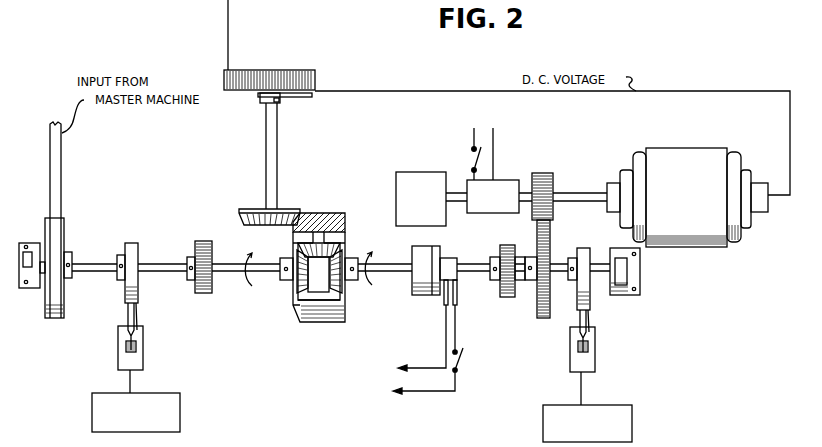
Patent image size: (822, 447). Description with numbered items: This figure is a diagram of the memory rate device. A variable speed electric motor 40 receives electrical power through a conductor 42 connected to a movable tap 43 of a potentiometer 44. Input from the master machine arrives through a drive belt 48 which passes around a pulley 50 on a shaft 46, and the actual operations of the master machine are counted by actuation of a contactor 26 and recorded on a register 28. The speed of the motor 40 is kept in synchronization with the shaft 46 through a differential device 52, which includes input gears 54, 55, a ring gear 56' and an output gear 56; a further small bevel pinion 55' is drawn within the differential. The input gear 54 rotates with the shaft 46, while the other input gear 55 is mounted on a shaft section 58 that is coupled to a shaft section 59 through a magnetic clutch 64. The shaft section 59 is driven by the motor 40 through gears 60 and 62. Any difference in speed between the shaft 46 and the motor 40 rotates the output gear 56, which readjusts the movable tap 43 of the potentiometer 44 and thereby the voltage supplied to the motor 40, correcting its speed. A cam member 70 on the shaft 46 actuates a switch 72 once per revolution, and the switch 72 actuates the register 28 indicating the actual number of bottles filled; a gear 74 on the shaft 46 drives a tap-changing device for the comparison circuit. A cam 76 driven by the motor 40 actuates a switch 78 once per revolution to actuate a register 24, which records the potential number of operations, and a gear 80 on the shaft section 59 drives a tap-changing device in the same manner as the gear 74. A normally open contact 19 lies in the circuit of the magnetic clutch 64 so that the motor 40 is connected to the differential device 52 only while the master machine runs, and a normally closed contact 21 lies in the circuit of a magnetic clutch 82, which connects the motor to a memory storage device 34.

The normally open contact 19 is at (464, 366).
The normally closed contact 21 is at (471, 160).
The register 24 is at (587, 407).
The contactor 26 is at (115, 319).
The register 28 is at (136, 401).
The memory storage device 34 is at (421, 199).
The variable speed electric motor 40 is at (693, 140).
The conductor 42 is at (556, 92).
The movable tap 43 is at (297, 97).
The potentiometer 44 is at (293, 70).
The shaft 46 is at (172, 264).
The drive belt 48 is at (53, 178).
The pulley 50 is at (64, 229).
The differential device 52 is at (311, 337).
The input gear 54 is at (296, 287).
The input gear 55 is at (352, 252).
The bevel gear 55' is at (319, 268).
The output gear 56 is at (265, 204).
The ring gear 56' is at (323, 207).
The shaft section 58 is at (398, 264).
The shaft section 59 is at (473, 266).
The gear 60 is at (545, 182).
The gear 62 is at (538, 244).
The magnetic clutch 64 is at (421, 278).
The cam member 70 is at (131, 245).
The switch 72 is at (142, 324).
The gear 74 is at (203, 241).
The cam 76 is at (587, 259).
The switch 78 is at (591, 328).
The gear 80 is at (507, 297).
The magnetic clutch 82 is at (493, 196).